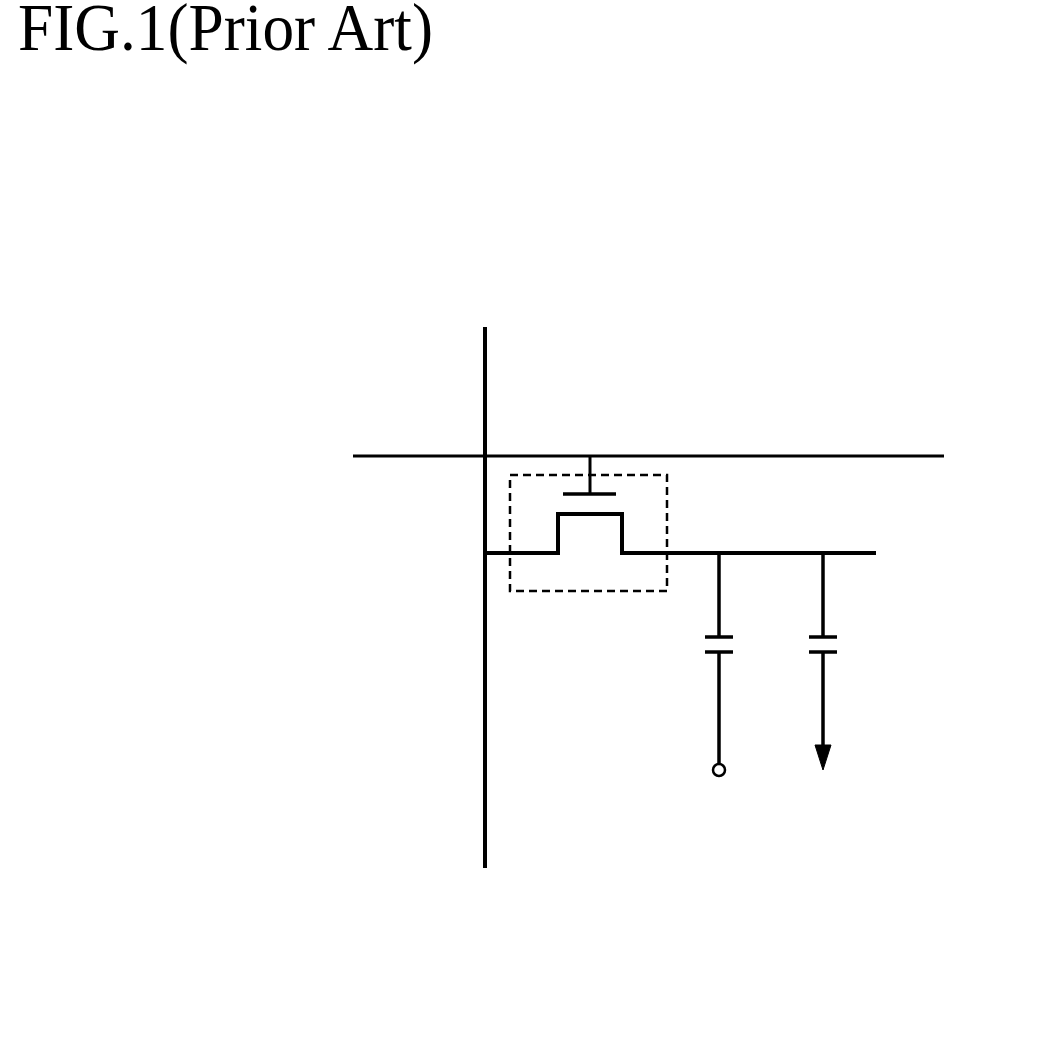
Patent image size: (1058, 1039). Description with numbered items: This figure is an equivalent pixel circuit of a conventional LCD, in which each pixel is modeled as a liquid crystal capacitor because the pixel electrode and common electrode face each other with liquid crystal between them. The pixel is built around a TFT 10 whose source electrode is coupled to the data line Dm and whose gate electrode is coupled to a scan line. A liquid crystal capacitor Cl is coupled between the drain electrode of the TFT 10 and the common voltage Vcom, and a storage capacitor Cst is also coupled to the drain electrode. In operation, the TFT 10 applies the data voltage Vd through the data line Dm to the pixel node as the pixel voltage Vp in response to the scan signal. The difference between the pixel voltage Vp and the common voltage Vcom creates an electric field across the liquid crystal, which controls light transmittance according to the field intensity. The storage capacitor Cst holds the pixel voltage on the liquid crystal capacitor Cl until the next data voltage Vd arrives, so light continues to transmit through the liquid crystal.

The TFT 10 is at (650, 472).
The data line Dm is at (486, 573).
The data voltage Vd is at (492, 548).
The pixel voltage Vp is at (748, 523).
The liquid crystal capacitor Cl is at (700, 658).
The storage capacitor Cst is at (856, 661).
The common voltage Vcom is at (716, 794).